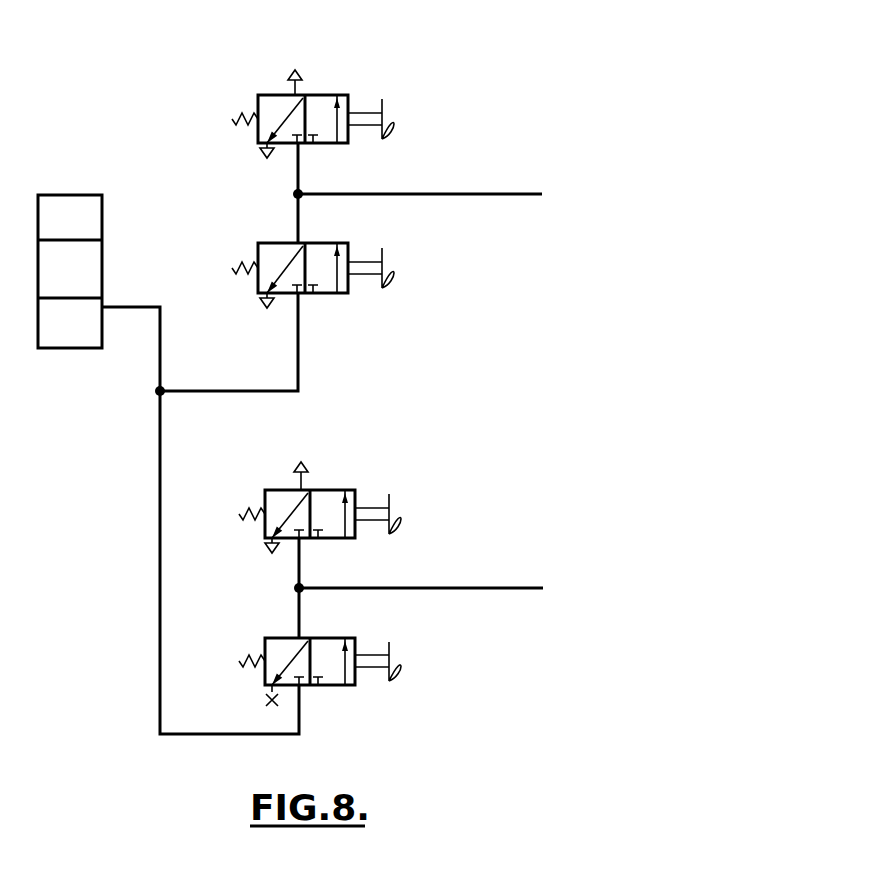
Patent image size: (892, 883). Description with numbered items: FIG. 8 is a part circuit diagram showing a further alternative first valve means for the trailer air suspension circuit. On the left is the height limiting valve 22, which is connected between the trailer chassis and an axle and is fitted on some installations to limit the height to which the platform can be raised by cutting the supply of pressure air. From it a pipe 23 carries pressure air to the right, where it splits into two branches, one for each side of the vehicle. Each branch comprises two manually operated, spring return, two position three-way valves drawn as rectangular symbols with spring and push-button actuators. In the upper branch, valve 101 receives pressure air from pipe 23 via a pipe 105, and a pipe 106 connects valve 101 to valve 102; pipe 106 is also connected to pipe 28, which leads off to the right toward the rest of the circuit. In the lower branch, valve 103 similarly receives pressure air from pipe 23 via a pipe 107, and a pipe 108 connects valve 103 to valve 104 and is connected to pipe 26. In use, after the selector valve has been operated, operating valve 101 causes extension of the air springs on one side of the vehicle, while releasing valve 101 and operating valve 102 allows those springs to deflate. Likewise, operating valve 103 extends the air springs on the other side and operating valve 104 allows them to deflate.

The height limiting valve 22 is at (108, 214).
The pipe 23 is at (125, 305).
The pipe 26 is at (480, 587).
The pipe 28 is at (453, 193).
The manually operated spring return two position 3-way valve 101 is at (360, 311).
The manually operated spring return two position 3-way valve 102 is at (352, 81).
The manually operated spring return two position 3-way valve 103 is at (354, 695).
The manually operated spring return two position 3-way valve 104 is at (362, 472).
The pipe 105 is at (229, 389).
The pipe 106 is at (296, 224).
The pipe 107 is at (160, 533).
The pipe 108 is at (297, 616).